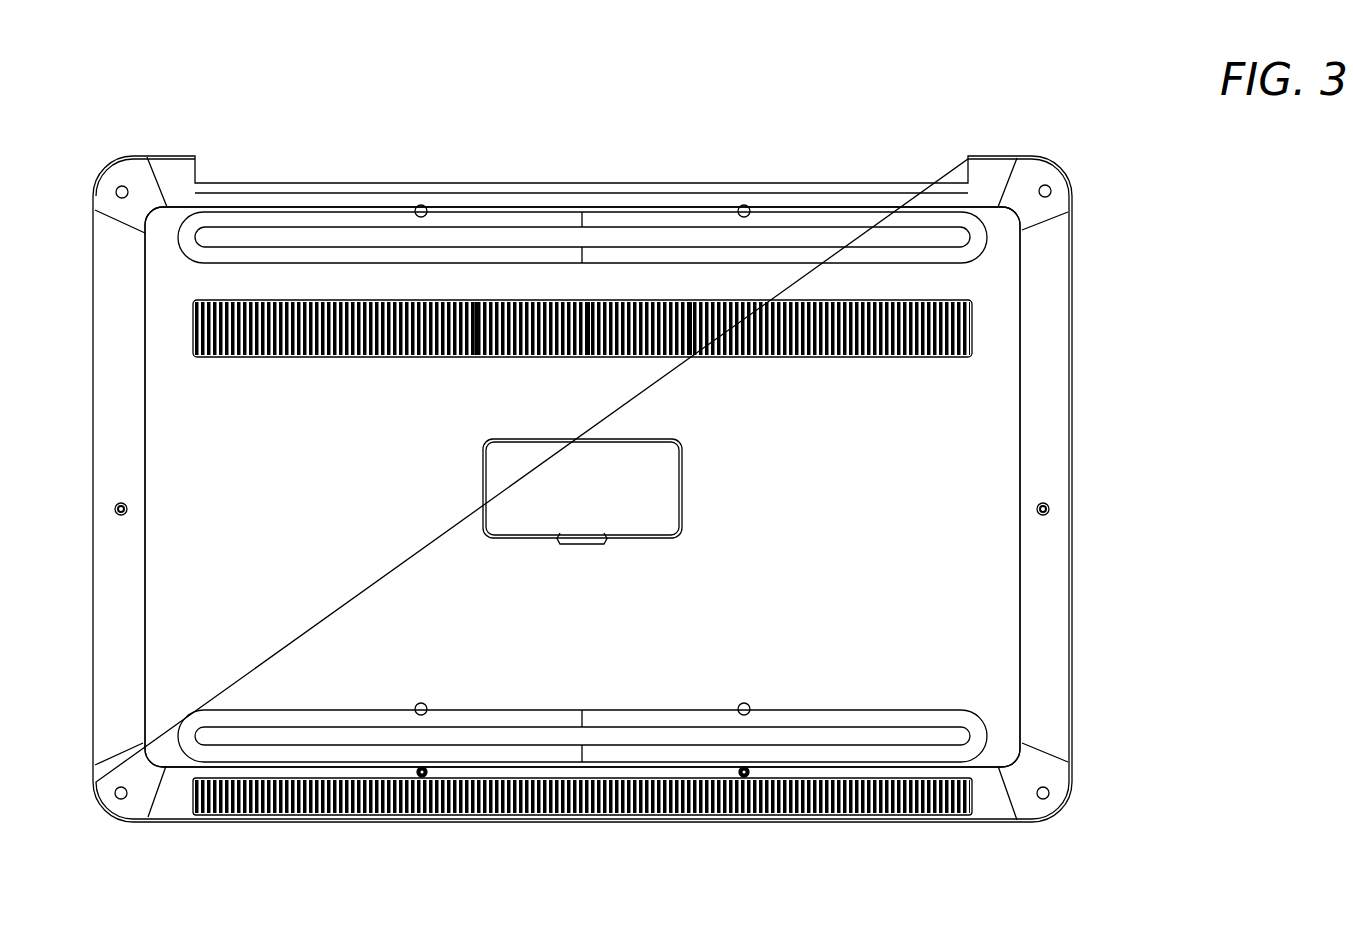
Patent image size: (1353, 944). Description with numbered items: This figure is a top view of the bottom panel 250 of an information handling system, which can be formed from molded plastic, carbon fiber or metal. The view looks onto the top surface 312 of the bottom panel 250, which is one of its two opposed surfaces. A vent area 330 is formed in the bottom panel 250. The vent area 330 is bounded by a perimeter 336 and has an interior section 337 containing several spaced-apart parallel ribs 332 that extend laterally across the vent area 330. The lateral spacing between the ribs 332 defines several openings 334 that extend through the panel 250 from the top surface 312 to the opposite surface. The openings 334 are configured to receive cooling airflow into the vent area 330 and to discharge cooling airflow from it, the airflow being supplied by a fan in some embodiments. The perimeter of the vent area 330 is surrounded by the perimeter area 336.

The bottom panel 250 is at (1070, 590).
The top surface 312 is at (988, 450).
The vent area 330 is at (342, 357).
The ribs 332 is at (476, 330).
The openings 334 is at (588, 330).
The perimeter area 336 is at (857, 378).
The interior section 337 is at (690, 332).